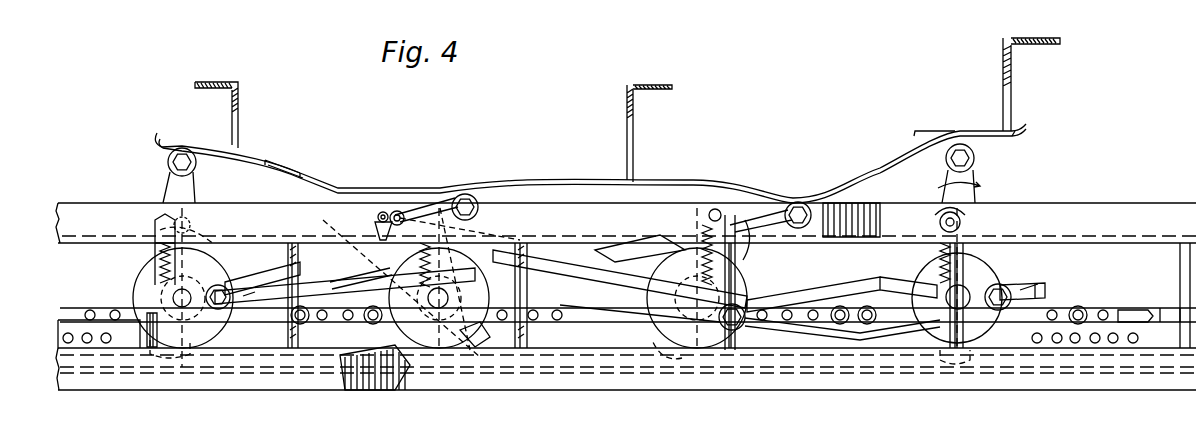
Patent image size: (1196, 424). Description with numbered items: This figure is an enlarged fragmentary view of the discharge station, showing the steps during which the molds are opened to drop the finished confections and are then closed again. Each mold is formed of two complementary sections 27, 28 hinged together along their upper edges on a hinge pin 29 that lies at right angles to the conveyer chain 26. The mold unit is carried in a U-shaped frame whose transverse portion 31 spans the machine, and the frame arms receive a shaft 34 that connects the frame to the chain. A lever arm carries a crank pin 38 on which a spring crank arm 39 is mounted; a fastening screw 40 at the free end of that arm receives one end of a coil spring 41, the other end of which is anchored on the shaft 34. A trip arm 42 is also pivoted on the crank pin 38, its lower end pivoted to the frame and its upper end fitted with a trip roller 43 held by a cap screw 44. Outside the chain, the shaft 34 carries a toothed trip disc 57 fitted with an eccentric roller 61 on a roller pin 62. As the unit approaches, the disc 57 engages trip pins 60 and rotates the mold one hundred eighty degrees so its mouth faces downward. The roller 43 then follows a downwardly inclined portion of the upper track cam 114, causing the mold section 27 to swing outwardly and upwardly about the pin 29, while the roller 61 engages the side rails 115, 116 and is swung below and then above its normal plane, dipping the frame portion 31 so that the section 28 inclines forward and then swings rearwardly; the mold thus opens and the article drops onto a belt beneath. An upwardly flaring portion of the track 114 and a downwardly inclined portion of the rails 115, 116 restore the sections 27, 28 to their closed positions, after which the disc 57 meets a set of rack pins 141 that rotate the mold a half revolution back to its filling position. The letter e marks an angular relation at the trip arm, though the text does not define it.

The conveyer chain 26 is at (1122, 308).
The mold section 27 is at (320, 284).
The mold section 28 is at (500, 345).
The hinge pin 29 is at (212, 214).
The transverse portion 31 is at (250, 290).
The shaft 34 is at (178, 298).
The crank pin 38 is at (432, 212).
The spring crank arm 39 is at (725, 212).
The fastening screw 40 is at (383, 210).
The coil spring 41 is at (150, 262).
The trip arm 42 is at (173, 184).
The trip roller 43 is at (168, 154).
The cap screw 44 is at (190, 165).
The trip disc 57 is at (190, 335).
The trip pin 60 is at (1097, 344).
The roller 61 is at (1052, 283).
The roller pin 62 is at (228, 306).
The upper track cam 114 is at (883, 158).
The side rail 115 is at (860, 290).
The side rail 116 is at (858, 333).
The rack pin 141 is at (92, 344).
The angle e is at (965, 176).